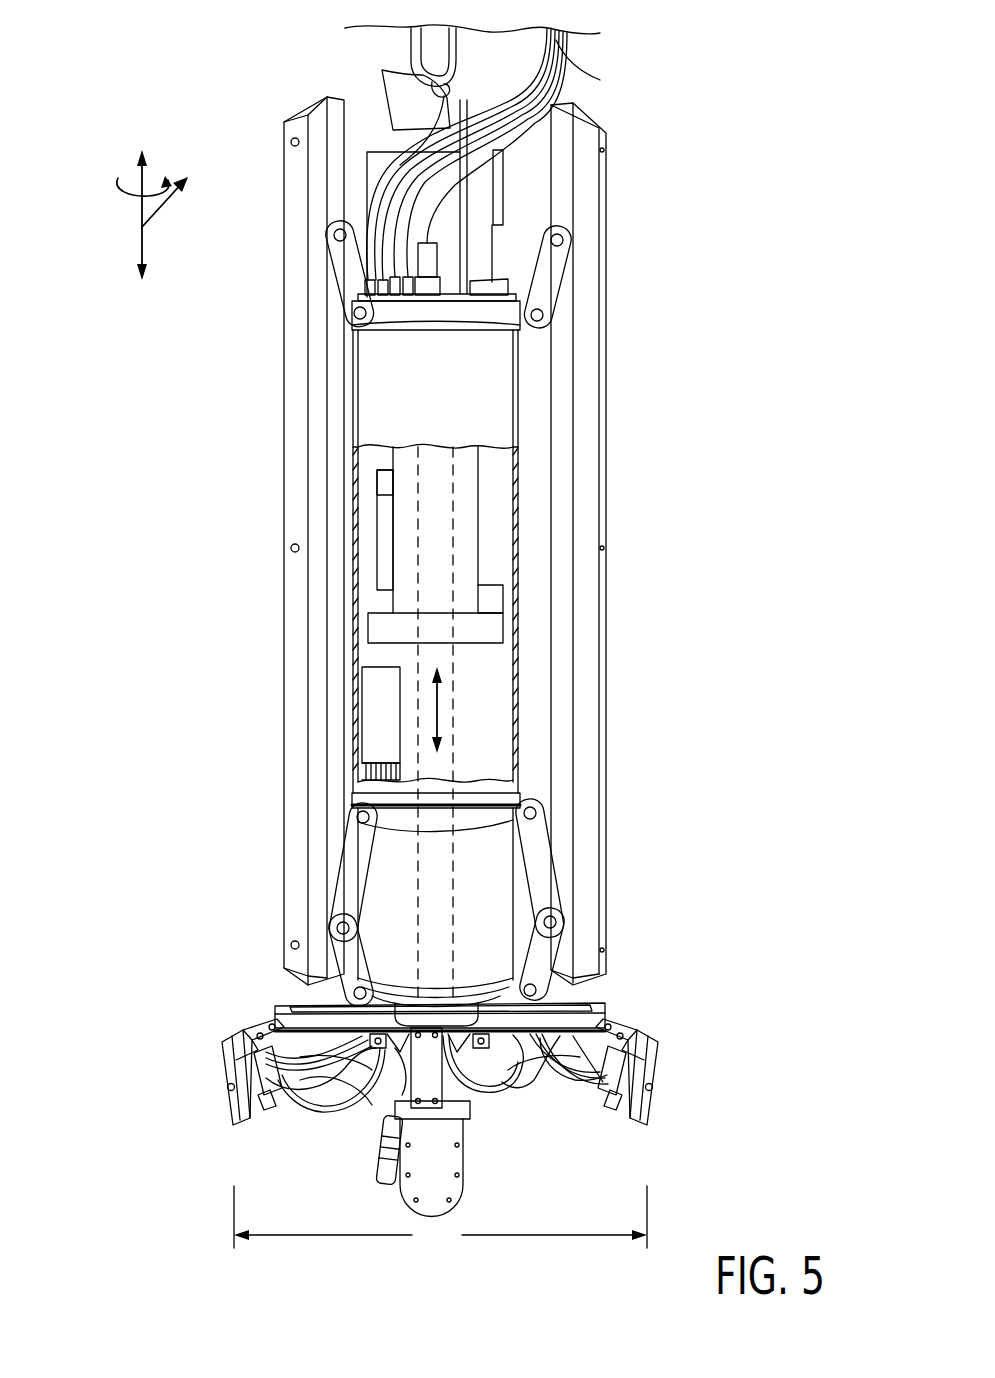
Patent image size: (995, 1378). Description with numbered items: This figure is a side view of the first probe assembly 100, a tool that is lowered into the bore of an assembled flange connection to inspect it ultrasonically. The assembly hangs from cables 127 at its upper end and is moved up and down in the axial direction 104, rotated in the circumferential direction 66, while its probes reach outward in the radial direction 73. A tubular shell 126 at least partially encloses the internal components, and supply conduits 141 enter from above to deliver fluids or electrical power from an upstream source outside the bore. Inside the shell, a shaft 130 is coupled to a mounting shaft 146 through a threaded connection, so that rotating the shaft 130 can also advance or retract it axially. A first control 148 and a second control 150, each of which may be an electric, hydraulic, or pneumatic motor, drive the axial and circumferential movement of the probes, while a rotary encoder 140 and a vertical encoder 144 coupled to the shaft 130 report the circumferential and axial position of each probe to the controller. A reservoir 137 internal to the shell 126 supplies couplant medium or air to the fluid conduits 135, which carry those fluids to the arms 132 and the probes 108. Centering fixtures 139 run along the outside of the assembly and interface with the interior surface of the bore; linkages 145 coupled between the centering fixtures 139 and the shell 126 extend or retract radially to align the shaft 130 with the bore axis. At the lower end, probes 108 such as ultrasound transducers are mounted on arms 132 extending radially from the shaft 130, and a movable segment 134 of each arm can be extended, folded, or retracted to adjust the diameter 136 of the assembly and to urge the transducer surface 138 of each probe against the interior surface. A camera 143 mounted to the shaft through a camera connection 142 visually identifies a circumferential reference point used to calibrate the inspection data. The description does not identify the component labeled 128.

The first probe assembly 100 is at (215, 68).
The circumferential direction 66 is at (131, 195).
The radial direction 73 is at (162, 212).
The axial direction 104 is at (140, 252).
The probes 108 is at (225, 1043).
The shell 126 is at (518, 402).
The cables 127 is at (408, 42).
The piston rod 128 is at (492, 894).
The shaft 130 is at (455, 705).
The arm 132 is at (290, 1006).
The movable segment 134 is at (277, 1108).
The fluid conduits 135 is at (352, 770).
The diameter 136 is at (440, 1218).
The reservoirs 137 is at (370, 665).
The transducer surface 138 is at (655, 1092).
The centering fixtures 139 is at (292, 692).
The rotary encoder 140 is at (487, 645).
The supply conduits 141 is at (588, 62).
The camera connection 142 is at (460, 1190).
The camera 143 is at (374, 1168).
The vertical encoder 144 is at (377, 545).
The linkages 145 is at (350, 880).
The mounting shaft 146 is at (480, 500).
The first control 148 is at (376, 473).
The second control 150 is at (503, 597).